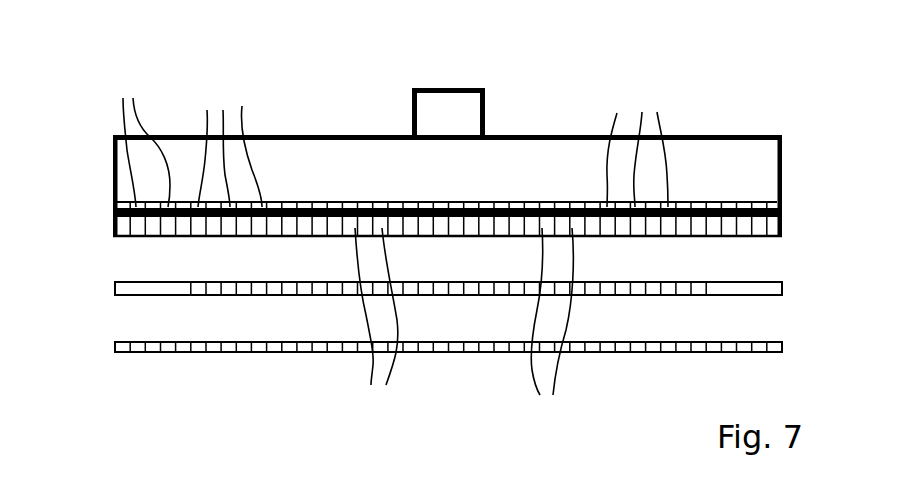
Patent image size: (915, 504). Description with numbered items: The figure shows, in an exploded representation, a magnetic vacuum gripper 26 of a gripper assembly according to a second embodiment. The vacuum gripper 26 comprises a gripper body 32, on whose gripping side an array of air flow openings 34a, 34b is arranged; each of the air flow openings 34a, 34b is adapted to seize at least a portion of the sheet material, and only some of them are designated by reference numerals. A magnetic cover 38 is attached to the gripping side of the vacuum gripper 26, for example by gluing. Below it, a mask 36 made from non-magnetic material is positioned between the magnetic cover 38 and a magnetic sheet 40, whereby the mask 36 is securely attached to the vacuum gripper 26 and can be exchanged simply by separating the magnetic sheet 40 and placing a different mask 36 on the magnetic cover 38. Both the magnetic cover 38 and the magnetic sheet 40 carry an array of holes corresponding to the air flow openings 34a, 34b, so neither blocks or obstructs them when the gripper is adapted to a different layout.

The vacuum gripper 26 is at (755, 88).
The gripper body 32 is at (782, 183).
The air flow openings 34a is at (433, 138).
The air flow openings 34b is at (337, 248).
The mask 36 is at (782, 285).
The magnetic cover 38 is at (782, 224).
The magnetic sheet 40 is at (115, 352).